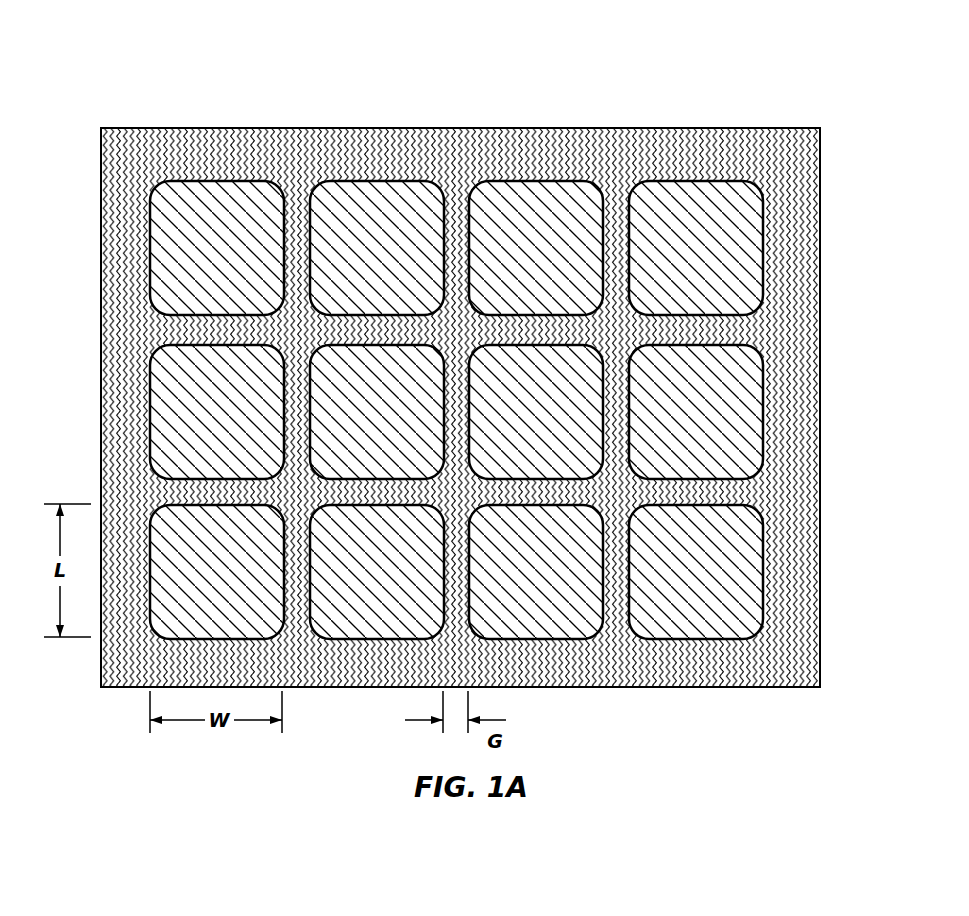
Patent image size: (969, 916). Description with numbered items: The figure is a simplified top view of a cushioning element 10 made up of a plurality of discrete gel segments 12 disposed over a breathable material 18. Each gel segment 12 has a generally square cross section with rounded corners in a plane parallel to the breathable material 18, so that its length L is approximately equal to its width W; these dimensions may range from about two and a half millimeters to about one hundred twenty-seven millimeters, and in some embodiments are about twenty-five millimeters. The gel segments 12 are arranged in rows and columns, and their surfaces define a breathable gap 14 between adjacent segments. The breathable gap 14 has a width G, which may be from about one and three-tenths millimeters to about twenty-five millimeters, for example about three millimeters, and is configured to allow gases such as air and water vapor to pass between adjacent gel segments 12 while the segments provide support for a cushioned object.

The cushioning element 10 is at (82, 86).
The gel segments 12 is at (398, 187).
The breathable gap 14 is at (612, 170).
The breathable material 18 is at (793, 424).